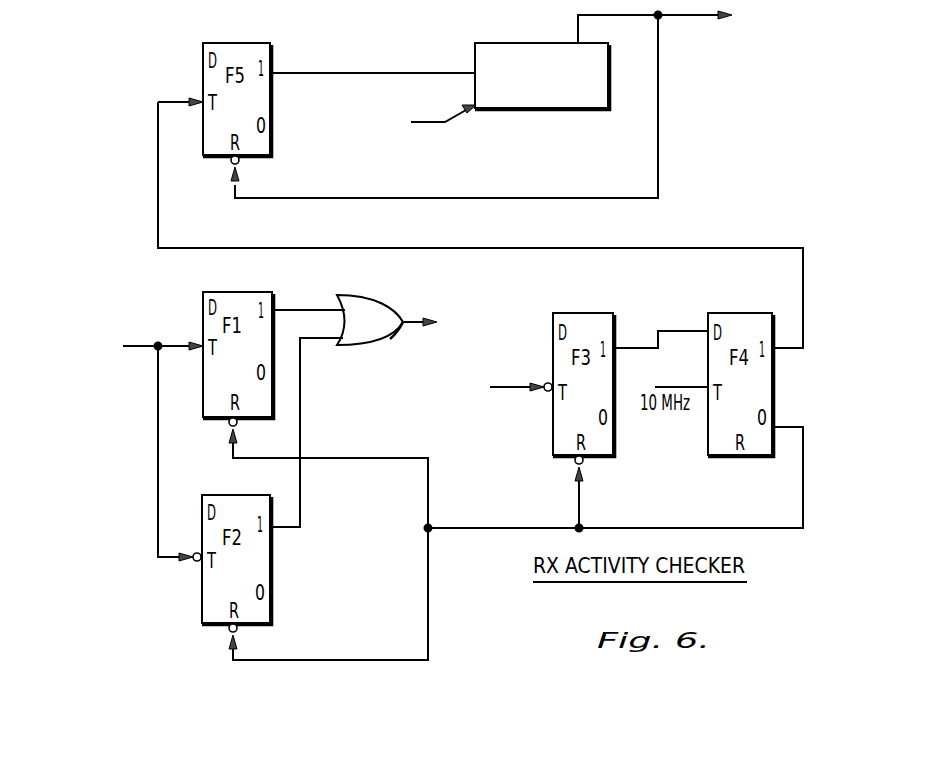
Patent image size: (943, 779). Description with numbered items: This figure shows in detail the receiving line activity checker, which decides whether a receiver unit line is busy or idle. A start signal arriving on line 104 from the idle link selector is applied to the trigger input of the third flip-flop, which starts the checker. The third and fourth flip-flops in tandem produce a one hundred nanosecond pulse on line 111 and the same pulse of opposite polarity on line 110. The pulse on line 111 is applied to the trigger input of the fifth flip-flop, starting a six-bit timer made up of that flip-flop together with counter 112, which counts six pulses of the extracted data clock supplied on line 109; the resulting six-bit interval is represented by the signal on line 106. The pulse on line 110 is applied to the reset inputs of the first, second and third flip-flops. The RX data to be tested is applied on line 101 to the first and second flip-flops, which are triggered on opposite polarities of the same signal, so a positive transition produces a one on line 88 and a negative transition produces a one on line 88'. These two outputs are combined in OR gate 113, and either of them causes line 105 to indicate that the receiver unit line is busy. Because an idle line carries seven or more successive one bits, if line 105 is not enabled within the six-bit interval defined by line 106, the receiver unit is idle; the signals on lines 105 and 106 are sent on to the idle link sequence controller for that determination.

The line 88 is at (308, 290).
The line 88' is at (307, 432).
The line 101 is at (147, 342).
The line 104 is at (510, 387).
The line 105 is at (420, 320).
The line 106 is at (698, 17).
The line 109 is at (457, 117).
The line 110 is at (737, 528).
The line 111 is at (714, 249).
The counter 112 is at (575, 109).
The OR gate 113 is at (385, 302).